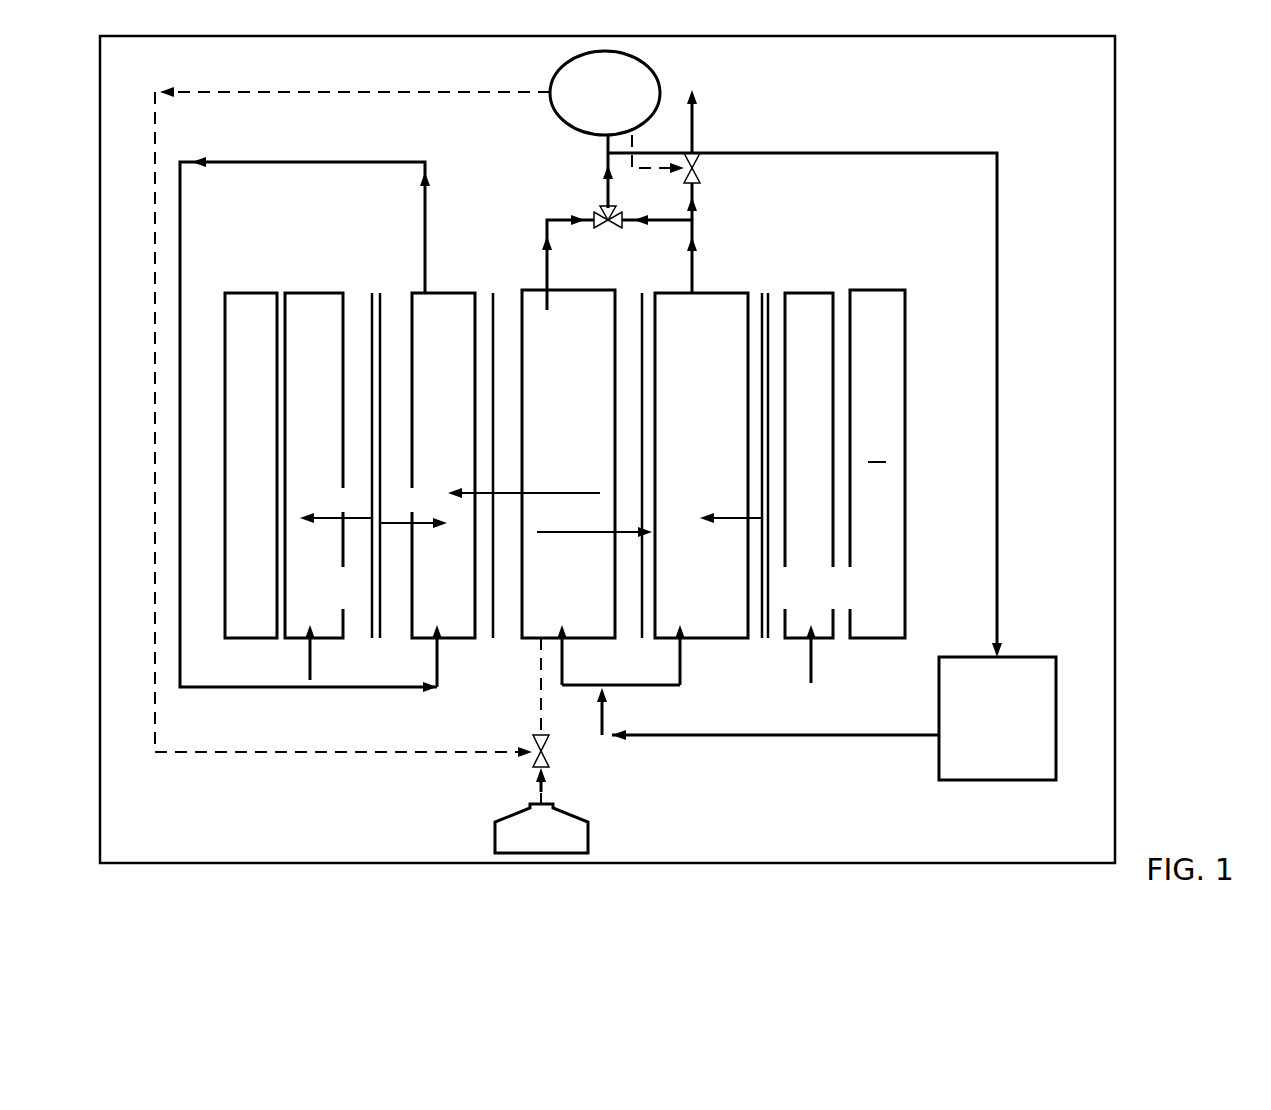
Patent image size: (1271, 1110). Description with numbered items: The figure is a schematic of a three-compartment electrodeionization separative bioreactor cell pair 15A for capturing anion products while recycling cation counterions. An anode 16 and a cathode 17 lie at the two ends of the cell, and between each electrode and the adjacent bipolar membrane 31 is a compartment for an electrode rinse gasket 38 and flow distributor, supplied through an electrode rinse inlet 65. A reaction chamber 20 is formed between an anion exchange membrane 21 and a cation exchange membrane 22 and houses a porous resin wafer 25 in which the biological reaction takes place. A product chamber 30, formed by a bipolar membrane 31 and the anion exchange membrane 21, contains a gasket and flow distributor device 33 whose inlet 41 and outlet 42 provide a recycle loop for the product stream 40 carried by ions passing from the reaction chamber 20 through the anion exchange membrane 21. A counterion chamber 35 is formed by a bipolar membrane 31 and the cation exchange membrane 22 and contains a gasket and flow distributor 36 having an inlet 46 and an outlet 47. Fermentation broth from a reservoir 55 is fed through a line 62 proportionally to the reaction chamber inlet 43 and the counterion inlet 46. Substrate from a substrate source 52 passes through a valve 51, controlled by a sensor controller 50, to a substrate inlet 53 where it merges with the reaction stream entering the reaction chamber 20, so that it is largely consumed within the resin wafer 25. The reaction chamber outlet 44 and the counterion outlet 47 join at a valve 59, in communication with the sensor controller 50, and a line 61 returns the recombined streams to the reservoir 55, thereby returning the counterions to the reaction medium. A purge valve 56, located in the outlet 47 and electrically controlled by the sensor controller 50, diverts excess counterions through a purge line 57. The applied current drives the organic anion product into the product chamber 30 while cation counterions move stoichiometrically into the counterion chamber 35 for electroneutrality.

The three chamber EDI separative bioreactor cell pair 15A is at (1117, 400).
The anode 16 is at (241, 329).
The cathode 17 is at (867, 329).
The reaction chamber 20 is at (507, 645).
The anion exchange membrane 21 is at (493, 303).
The cation exchange membrane 22 is at (641, 624).
The resin wafer 25 is at (557, 574).
The product chamber 30 is at (393, 293).
The bipolar membrane 31 is at (372, 300).
The gasket and flow distributor device 33 is at (434, 574).
The counterion chamber 35 is at (757, 290).
The gasket and flow distributor 36 is at (690, 574).
The electrode rinse gasket 38 is at (802, 290).
The product stream 40 is at (236, 160).
The inlet 41 is at (438, 645).
The outlet 42 is at (422, 292).
The reaction chamber inlet 43 is at (564, 640).
The reaction chamber outlet 44 is at (553, 282).
The inlet 46 is at (685, 640).
The outlet 47 is at (697, 288).
The sensor controller 50 is at (553, 113).
The valve 51 is at (548, 750).
The substrate source 52 is at (496, 832).
The substrate inlet 53 is at (541, 648).
The reservoir 55 is at (1057, 724).
The purge valve 56 is at (700, 158).
The purge line 57 is at (697, 118).
The valve 59 is at (600, 233).
The line 61 is at (868, 152).
The line 62 is at (887, 738).
The electrode rinse inlet 65 is at (312, 654).